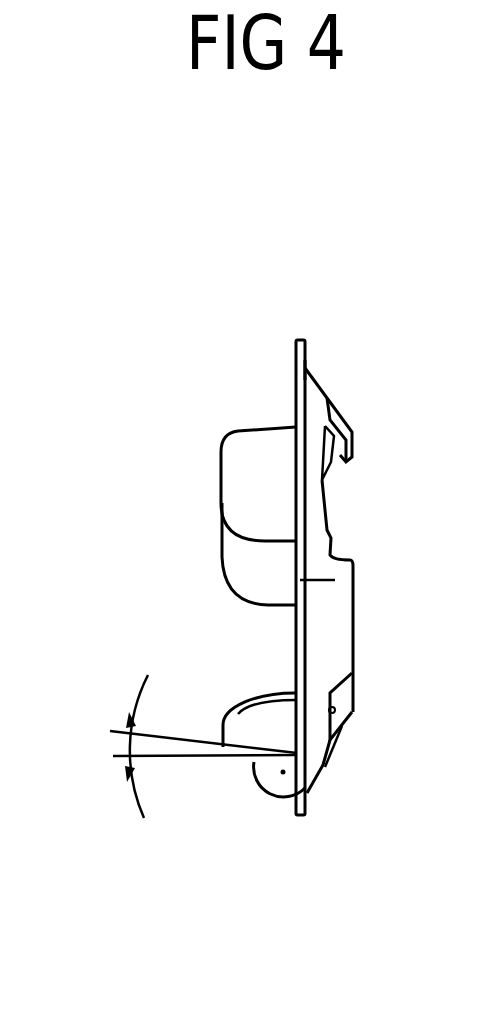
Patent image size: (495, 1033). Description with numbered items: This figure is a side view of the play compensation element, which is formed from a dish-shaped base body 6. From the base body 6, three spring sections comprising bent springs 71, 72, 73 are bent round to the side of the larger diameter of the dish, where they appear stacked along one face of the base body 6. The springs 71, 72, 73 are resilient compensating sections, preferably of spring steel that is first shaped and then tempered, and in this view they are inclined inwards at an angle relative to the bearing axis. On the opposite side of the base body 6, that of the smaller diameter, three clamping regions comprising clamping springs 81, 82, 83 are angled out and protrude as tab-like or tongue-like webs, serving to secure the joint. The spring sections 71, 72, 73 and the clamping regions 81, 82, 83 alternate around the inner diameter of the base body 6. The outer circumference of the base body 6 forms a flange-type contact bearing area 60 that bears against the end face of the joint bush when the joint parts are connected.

The flange-type contact bearing area 60 is at (297, 340).
The base body 6 is at (308, 368).
The bent spring 71 is at (247, 462).
The bent spring 72 is at (240, 553).
The bent spring 73 is at (272, 717).
The clamping spring 81 is at (335, 626).
The clamping spring 82 is at (352, 712).
The clamping spring 83 is at (353, 445).